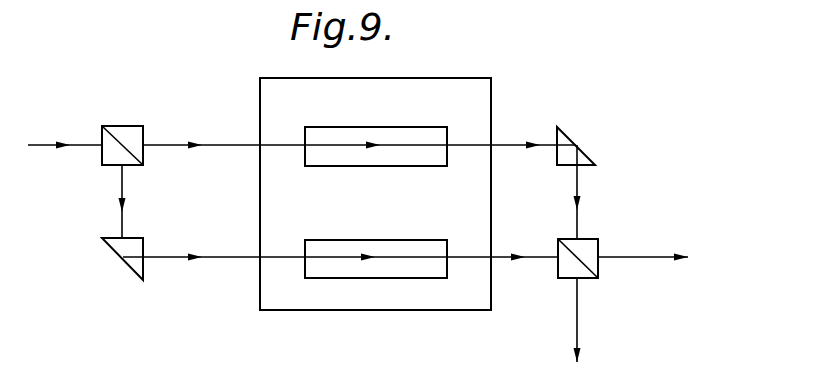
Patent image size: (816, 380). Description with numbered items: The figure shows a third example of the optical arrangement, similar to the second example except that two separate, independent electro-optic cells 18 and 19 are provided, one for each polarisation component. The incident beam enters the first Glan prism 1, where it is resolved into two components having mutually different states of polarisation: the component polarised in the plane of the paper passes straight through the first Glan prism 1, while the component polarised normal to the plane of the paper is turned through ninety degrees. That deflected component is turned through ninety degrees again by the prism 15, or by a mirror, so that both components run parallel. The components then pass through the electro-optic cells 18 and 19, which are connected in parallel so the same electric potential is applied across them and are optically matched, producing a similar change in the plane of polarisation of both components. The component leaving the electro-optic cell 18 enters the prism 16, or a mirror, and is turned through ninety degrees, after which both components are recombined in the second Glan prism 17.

The first Glan prism 1 is at (132, 136).
The prism 15 is at (138, 252).
The prism 16 is at (570, 141).
The second Glan prism 17 is at (590, 248).
The electro-optic cell 18 is at (383, 135).
The electro-optic cell 19 is at (312, 270).